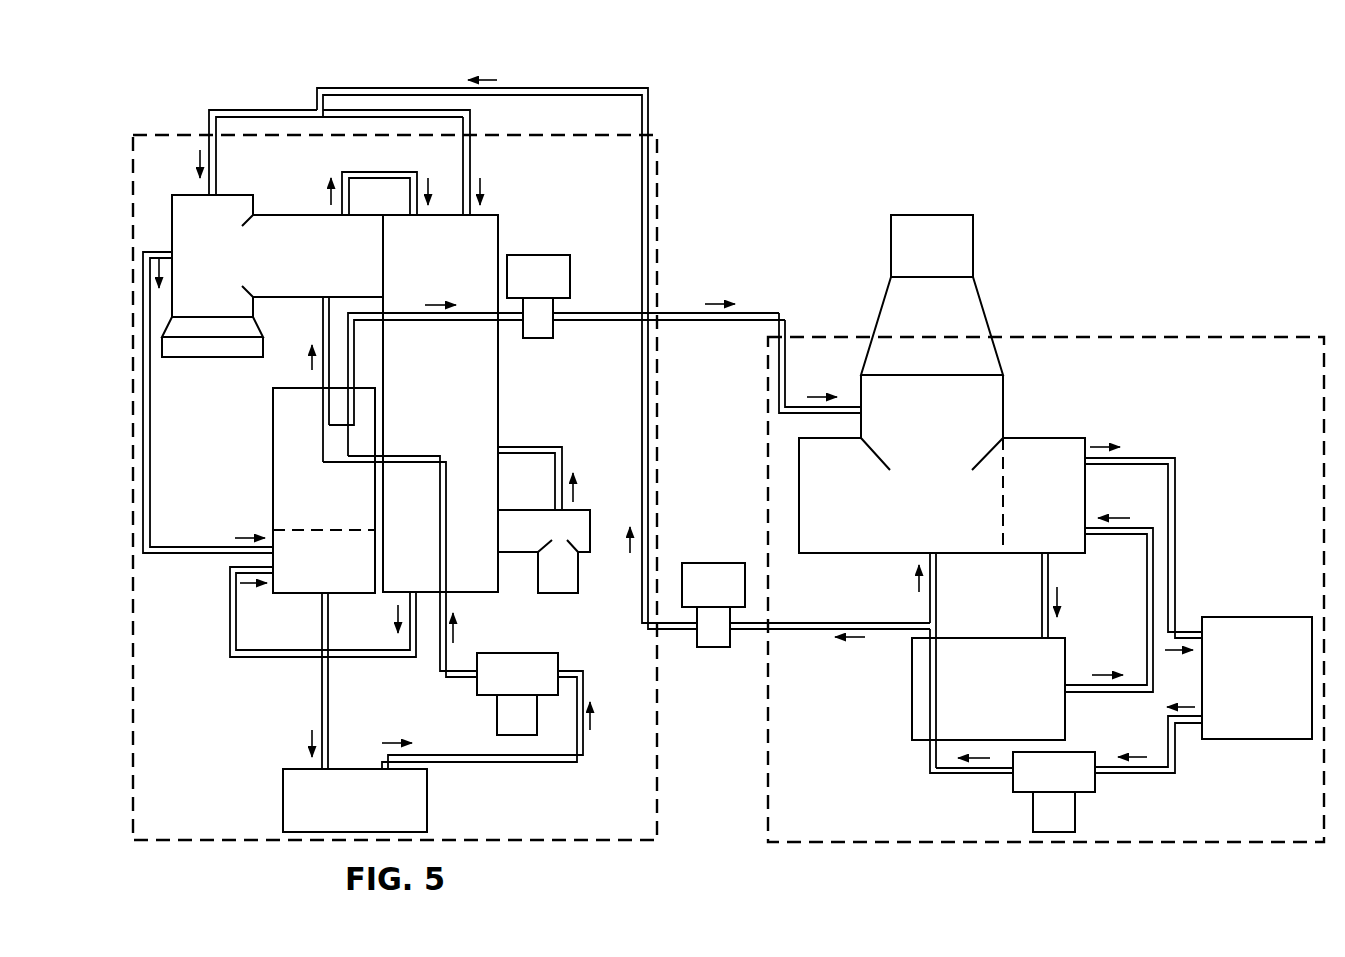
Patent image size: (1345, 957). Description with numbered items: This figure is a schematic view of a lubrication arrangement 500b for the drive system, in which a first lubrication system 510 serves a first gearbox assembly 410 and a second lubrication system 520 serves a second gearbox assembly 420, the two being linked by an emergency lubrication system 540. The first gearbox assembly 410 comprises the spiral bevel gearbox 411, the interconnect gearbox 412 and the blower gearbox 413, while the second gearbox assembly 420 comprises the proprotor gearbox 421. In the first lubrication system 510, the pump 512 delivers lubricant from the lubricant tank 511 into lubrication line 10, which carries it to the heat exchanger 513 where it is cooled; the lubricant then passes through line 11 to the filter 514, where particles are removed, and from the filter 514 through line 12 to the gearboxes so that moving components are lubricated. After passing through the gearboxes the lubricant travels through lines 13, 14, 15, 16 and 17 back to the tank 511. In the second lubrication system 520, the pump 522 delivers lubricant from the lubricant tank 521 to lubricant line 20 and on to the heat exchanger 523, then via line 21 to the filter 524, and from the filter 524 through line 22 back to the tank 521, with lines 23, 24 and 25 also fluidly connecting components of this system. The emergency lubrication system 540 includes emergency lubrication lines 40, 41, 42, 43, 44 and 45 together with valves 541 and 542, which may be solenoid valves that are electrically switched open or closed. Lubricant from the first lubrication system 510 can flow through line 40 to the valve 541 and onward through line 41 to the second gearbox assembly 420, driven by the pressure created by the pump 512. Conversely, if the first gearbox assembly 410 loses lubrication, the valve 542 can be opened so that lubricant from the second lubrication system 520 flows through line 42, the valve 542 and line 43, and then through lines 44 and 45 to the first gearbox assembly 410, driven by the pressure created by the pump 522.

The lubrication line 10 is at (322, 694).
The lubrication line 11 is at (562, 762).
The lubrication line 12 is at (406, 463).
The lubrication line 13 is at (322, 338).
The lubrication line 14 is at (365, 172).
The lubrication line 15 is at (183, 555).
The lubrication line 16 is at (527, 455).
The lubrication line 17 is at (230, 613).
The lubricant line 20 is at (1132, 456).
The lubrication line 21 is at (1133, 775).
The lubrication line 22 is at (930, 757).
The lubrication line 23 is at (930, 611).
The lubrication line 24 is at (1110, 694).
The lubrication line 25 is at (1041, 596).
The emergency lubrication line 40 is at (418, 322).
The emergency lubrication line 41 is at (788, 325).
The emergency lubrication line 42 is at (811, 631).
The emergency lubrication line 43 is at (690, 632).
The emergency lubrication line 44 is at (263, 109).
The emergency lubrication line 45 is at (472, 167).
The first gearbox assembly 410 is at (548, 387).
The spiral bevel gearbox 411 is at (299, 268).
The interconnect gearbox 412 is at (459, 403).
The blower gearbox 413 is at (561, 591).
The second gearbox assembly 420 is at (1005, 302).
The proprotor gearbox 421 is at (912, 438).
The lubrication arrangement 500b is at (1191, 141).
The first lubrication system 510 is at (188, 763).
The lubricant tank 511 is at (273, 495).
The pump 512 is at (345, 590).
The heat exchanger 513 is at (428, 803).
The filter 514 is at (517, 652).
The second lubrication system 520 is at (1230, 490).
The lubricant tank 521 is at (980, 718).
The pump 522 is at (1043, 442).
The heat exchanger 523 is at (1237, 723).
The filter 524 is at (1033, 812).
The emergency lubrication system 540 is at (742, 241).
The valve 541 is at (538, 255).
The valve 542 is at (714, 650).